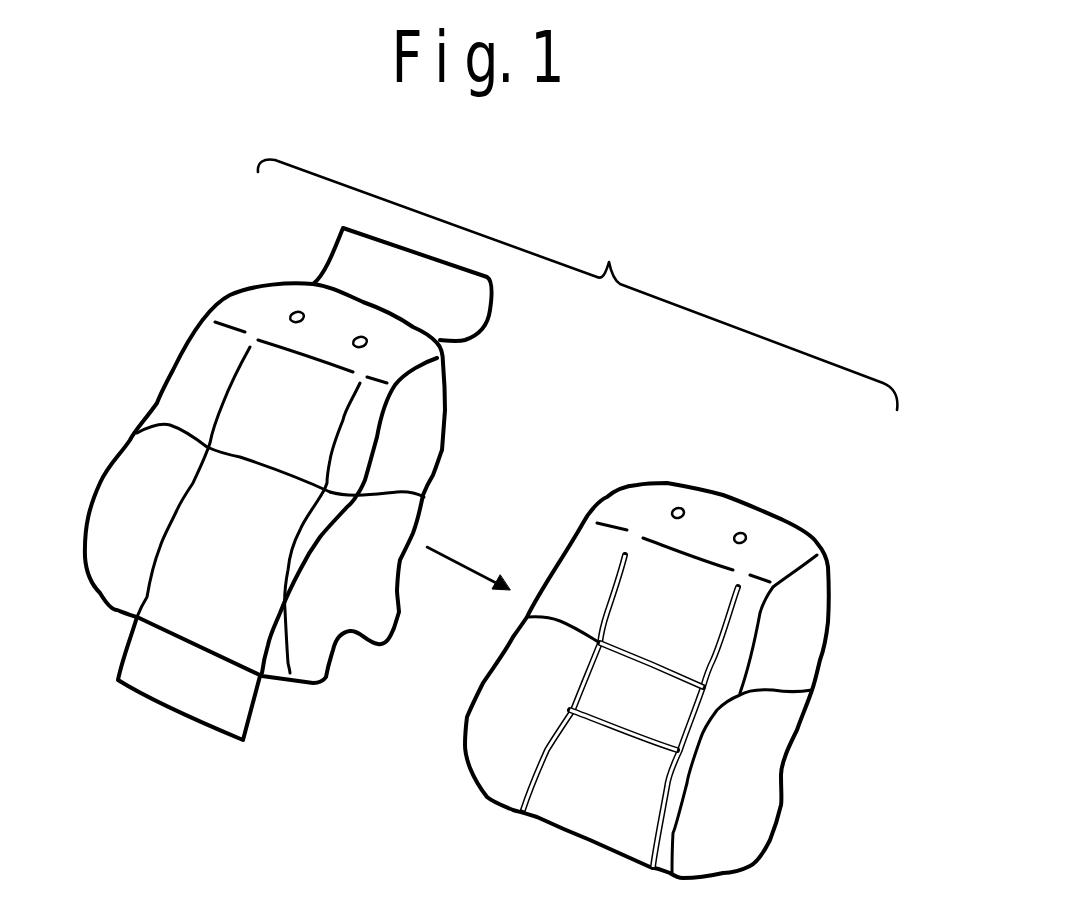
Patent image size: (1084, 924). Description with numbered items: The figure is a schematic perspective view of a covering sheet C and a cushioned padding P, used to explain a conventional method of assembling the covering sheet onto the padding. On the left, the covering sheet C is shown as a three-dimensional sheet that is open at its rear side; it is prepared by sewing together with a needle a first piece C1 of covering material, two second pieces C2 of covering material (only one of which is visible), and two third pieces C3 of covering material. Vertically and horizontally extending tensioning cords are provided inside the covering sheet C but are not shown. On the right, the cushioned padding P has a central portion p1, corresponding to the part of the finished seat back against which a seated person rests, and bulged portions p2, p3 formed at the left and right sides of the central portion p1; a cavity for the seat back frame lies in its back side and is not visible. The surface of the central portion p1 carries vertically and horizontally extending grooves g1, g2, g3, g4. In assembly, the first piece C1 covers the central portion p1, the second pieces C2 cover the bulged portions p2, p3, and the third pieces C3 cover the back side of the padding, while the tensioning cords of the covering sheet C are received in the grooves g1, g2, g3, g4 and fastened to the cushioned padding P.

The covering sheet C is at (233, 297).
The first piece of covering material C1 is at (217, 537).
The second piece of covering material C2 is at (427, 413).
The third piece of covering material C3 is at (163, 770).
The cushioned padding P is at (733, 495).
The central portion p1 is at (663, 716).
The bulged portion p2 is at (528, 650).
The bulged portion p3 is at (663, 830).
The groove g1 is at (592, 688).
The groove g2 is at (673, 780).
The groove g3 is at (647, 675).
The groove g4 is at (620, 713).